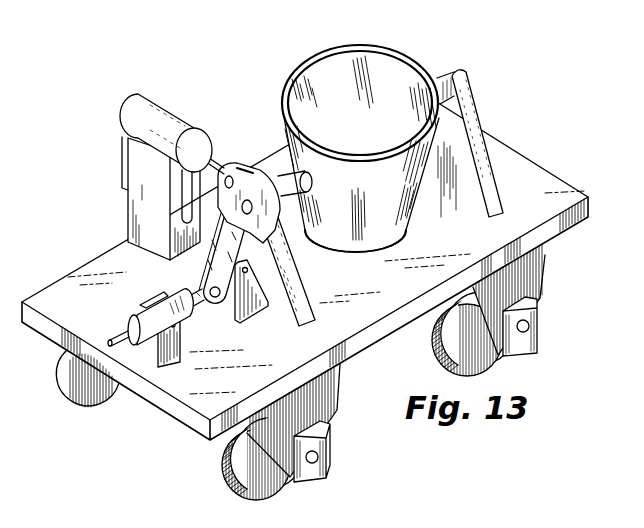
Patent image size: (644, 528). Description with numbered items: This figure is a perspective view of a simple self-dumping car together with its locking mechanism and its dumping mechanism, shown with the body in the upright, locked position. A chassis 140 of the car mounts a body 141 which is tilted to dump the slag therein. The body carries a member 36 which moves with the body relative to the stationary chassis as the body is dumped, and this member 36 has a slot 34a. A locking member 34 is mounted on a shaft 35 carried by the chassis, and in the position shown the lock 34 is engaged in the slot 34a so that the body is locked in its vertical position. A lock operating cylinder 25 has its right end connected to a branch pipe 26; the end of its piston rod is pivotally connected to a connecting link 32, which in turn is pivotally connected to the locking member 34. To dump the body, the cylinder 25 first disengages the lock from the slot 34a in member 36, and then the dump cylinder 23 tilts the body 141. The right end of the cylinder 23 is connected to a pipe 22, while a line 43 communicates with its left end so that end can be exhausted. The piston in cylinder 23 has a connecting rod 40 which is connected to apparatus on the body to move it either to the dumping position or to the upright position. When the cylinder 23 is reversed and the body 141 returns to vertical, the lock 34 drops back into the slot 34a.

The chassis 140 is at (428, 313).
The body 141 is at (368, 46).
The dump cylinder 23 is at (158, 109).
The pipe 22 is at (127, 165).
The line 43 is at (182, 204).
The connecting rod 40 is at (218, 163).
The member 36 is at (240, 164).
The slot 34a is at (285, 258).
The locking member 34 is at (200, 290).
The shaft 35 is at (250, 271).
The connecting link 32 is at (197, 299).
The lock operating cylinder 25 is at (125, 332).
The branch pipe 26 is at (122, 343).